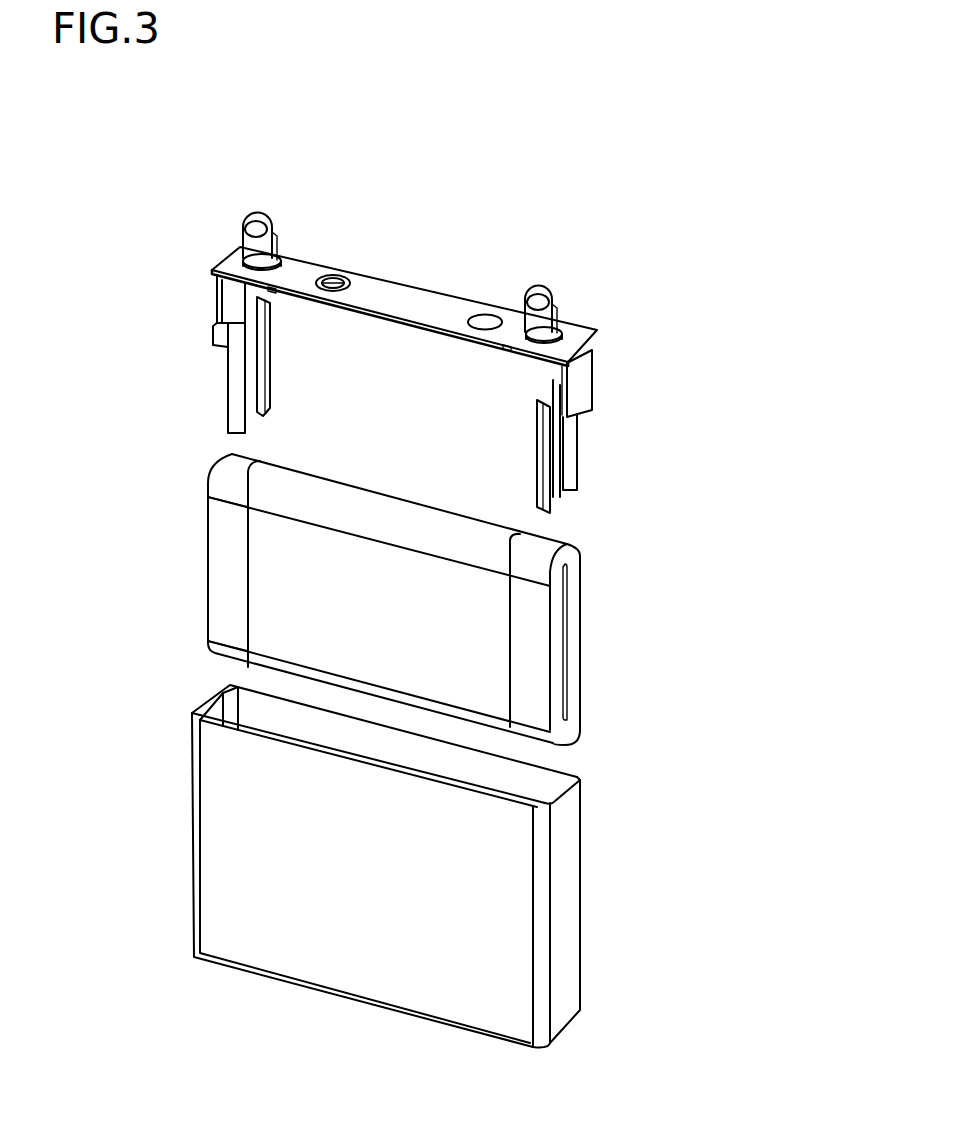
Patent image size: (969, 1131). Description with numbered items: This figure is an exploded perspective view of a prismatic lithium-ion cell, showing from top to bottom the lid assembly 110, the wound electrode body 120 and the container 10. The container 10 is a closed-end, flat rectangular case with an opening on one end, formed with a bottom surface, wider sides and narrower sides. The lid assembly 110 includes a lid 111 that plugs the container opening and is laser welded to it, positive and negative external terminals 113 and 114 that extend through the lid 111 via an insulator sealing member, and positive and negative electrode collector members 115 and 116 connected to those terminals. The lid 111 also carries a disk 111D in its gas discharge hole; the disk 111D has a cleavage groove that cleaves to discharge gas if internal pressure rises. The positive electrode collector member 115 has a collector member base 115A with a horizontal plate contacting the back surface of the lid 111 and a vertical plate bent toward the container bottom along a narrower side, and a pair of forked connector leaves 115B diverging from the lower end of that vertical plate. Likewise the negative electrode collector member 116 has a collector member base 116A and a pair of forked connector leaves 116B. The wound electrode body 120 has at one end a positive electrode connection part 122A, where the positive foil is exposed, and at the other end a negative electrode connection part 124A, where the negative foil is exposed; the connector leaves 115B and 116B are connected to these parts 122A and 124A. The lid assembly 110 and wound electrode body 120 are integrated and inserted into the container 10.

The container 10 is at (567, 895).
The lid assembly 110 is at (705, 192).
The lid 111 is at (390, 292).
The disk 111D is at (358, 276).
The positive external terminal 113 is at (268, 218).
The negative external terminal 114 is at (548, 290).
The positive electrode collector member 115 is at (100, 275).
The collector member base 115A is at (217, 303).
The forked connector leaves 115B is at (230, 395).
The negative electrode collector member 116 is at (710, 355).
The collector member base 116A is at (585, 368).
The forked connector leaves 116B is at (572, 455).
The wound electrode body 120 is at (262, 558).
The positive electrode connection part 122A is at (222, 607).
The negative electrode connection part 124A is at (538, 648).